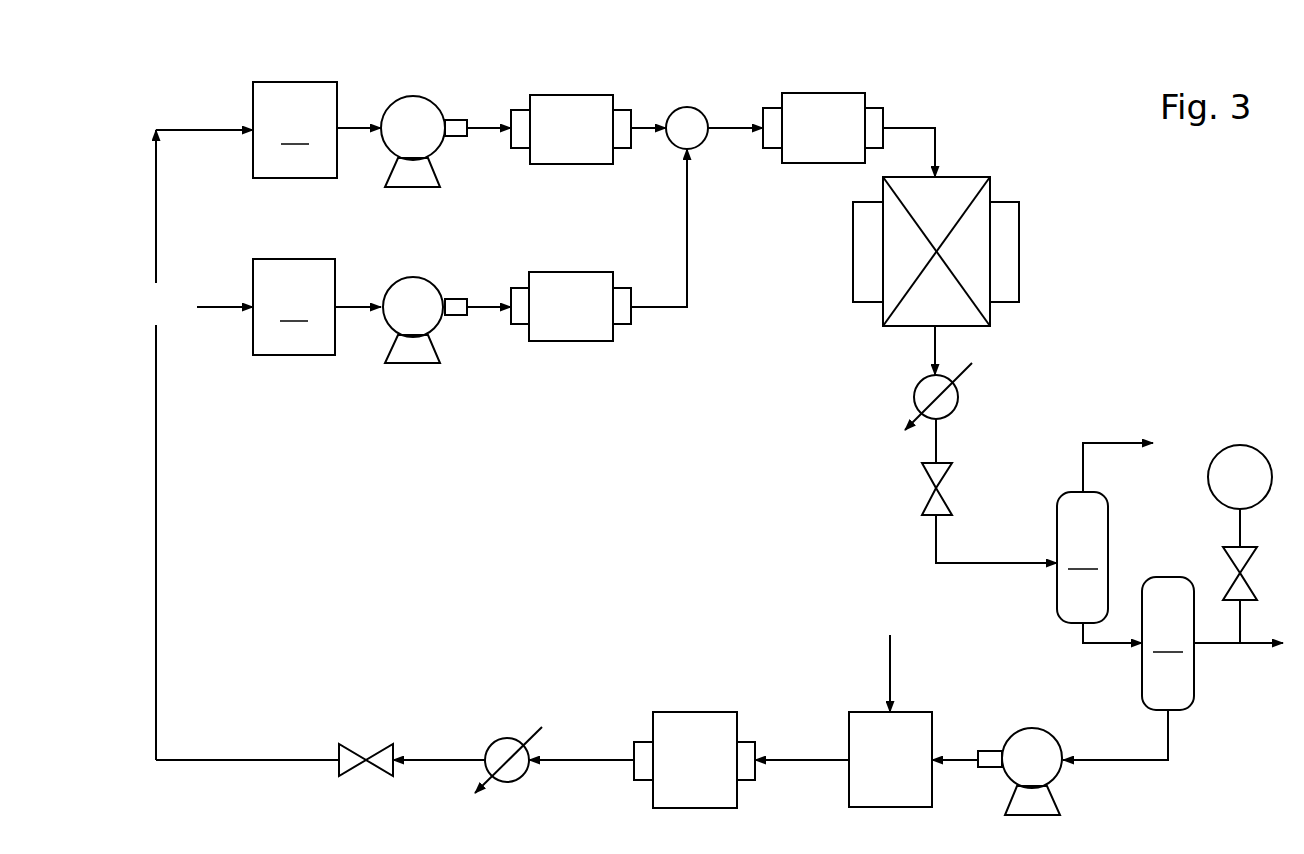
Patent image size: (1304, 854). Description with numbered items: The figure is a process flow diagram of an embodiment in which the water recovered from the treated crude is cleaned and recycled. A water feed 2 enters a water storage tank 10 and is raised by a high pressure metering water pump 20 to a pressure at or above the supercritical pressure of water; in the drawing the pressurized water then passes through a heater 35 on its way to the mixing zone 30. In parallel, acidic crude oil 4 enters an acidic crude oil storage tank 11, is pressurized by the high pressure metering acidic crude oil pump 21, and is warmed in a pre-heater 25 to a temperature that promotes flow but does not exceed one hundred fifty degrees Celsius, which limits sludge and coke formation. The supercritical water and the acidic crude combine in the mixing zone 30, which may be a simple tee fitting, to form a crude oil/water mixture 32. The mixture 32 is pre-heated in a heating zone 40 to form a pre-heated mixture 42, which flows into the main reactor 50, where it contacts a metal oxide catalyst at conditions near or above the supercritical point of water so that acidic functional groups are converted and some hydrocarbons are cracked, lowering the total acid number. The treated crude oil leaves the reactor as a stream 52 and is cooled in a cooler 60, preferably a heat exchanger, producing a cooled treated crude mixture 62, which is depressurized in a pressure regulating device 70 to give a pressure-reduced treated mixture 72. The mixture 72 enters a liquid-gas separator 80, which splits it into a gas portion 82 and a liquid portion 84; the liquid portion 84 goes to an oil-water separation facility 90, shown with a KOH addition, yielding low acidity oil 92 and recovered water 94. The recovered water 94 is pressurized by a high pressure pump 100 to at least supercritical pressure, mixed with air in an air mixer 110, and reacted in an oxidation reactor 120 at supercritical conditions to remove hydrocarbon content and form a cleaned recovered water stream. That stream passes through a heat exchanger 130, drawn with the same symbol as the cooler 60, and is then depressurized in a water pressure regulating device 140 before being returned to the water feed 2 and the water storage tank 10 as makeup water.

The water feed 2 is at (222, 127).
The acidic crude oil 4 is at (218, 305).
The water storage tank 10 is at (317, 130).
The acidic crude oil storage tank 11 is at (317, 307).
The high pressure metering water pump 20 is at (413, 97).
The high pressure metering acidic crude oil pump 21 is at (413, 277).
The pre-heater 25 is at (575, 272).
The mixing zone 30 is at (690, 107).
The crude oil/water mixture 32 is at (715, 130).
The water heater 35 is at (573, 95).
The heating zone 40 is at (820, 93).
The pre-heated mixture 42 is at (905, 128).
The main reactor 50 is at (955, 177).
The reactor effluent line 52 is at (936, 343).
The cooler 60 is at (958, 397).
The cooled treated crude mixture 62 is at (936, 440).
The pressure regulating device 70 is at (925, 483).
The pressure-reduced treated mixture 72 is at (980, 563).
The liquid-gas separator 80 is at (1082, 557).
The gas portion 82 is at (1103, 443).
The liquid portion 84 is at (1110, 645).
The oil-water separation facility 90 is at (1168, 643).
The low acidity oil 92 is at (1250, 645).
The recovered water 94 is at (1142, 758).
The high pressure pump 100 is at (1032, 727).
The air mixer 110 is at (870, 712).
The oxidation reactor 120 is at (693, 712).
The recycle cooler 130 is at (503, 740).
The water pressure regulating device 140 is at (378, 750).